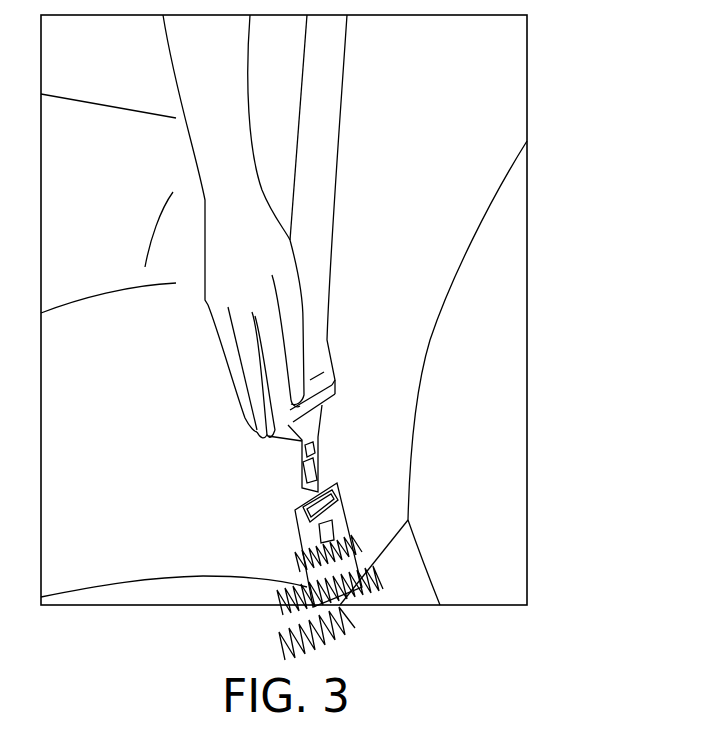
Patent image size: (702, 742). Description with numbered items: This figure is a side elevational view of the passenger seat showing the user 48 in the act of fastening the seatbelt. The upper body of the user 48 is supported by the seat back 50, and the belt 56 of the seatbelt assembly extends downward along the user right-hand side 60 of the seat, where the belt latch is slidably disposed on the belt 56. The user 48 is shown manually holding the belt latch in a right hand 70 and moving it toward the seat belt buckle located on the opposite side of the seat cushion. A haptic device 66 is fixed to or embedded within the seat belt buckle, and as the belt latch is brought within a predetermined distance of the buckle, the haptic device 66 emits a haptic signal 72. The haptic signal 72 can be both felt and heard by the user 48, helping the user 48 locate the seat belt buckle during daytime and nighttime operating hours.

The user 48 is at (501, 87).
The seat back 50 is at (198, 592).
The belt 56 is at (327, 144).
The user right-hand side 60 is at (307, 552).
The haptic device 66 is at (345, 523).
The right hand 70 is at (213, 308).
The haptic signal 72 is at (373, 620).